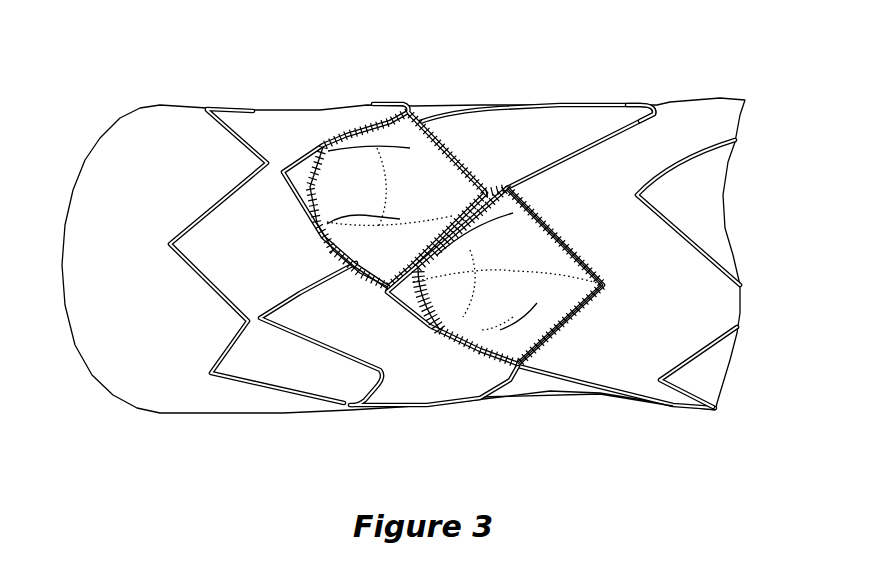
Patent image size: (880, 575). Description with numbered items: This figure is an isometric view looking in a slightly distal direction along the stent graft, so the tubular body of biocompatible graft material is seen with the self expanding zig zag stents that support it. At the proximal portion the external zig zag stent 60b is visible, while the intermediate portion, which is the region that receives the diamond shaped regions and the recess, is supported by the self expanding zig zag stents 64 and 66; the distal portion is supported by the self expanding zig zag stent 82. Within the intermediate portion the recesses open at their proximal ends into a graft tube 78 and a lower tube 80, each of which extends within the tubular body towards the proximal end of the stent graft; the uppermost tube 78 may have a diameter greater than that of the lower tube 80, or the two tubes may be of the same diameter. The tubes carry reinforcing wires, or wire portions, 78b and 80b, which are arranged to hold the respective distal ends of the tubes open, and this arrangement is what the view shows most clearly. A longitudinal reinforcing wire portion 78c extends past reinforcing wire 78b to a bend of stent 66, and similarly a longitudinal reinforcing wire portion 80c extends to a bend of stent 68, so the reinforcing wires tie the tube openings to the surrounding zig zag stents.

The self expanding zig zag stent 60b is at (228, 384).
The self expanding zig zag stent 64 is at (320, 347).
The self expanding zig zag stent 66 is at (543, 105).
The stent 68 is at (650, 128).
The self expanding zig zag stent 82 is at (702, 146).
The graft tube 78 is at (351, 184).
The reinforcing wire 78b is at (392, 190).
The longitudinal reinforcing wire 78c is at (330, 238).
The tube 80 is at (456, 293).
The reinforcing wire 80b is at (478, 290).
The longitudinal reinforcing wire 80c is at (543, 350).